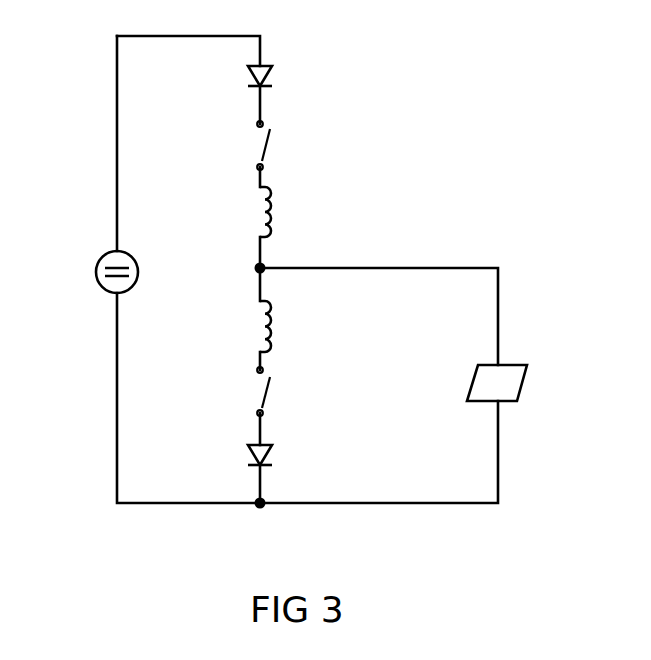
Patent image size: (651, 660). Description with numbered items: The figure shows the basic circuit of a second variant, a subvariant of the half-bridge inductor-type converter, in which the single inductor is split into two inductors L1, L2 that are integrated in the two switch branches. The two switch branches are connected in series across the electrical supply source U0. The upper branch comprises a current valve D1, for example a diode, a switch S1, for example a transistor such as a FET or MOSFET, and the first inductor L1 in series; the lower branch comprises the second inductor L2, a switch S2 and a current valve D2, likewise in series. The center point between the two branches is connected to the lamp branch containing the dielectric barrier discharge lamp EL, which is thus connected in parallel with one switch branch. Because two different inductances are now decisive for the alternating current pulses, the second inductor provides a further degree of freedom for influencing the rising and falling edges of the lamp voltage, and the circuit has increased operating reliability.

The electrical supply source U0 is at (95, 255).
The current valve D1 is at (281, 77).
The switch S1 is at (284, 145).
The first inductor L1 is at (285, 212).
The second inductor L2 is at (285, 326).
The switch S2 is at (284, 391).
The current valve D2 is at (281, 457).
The dielectric barrier discharge lamp EL is at (515, 383).